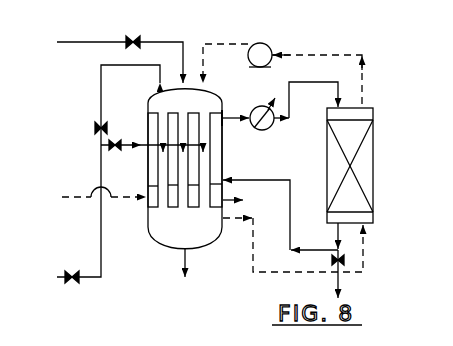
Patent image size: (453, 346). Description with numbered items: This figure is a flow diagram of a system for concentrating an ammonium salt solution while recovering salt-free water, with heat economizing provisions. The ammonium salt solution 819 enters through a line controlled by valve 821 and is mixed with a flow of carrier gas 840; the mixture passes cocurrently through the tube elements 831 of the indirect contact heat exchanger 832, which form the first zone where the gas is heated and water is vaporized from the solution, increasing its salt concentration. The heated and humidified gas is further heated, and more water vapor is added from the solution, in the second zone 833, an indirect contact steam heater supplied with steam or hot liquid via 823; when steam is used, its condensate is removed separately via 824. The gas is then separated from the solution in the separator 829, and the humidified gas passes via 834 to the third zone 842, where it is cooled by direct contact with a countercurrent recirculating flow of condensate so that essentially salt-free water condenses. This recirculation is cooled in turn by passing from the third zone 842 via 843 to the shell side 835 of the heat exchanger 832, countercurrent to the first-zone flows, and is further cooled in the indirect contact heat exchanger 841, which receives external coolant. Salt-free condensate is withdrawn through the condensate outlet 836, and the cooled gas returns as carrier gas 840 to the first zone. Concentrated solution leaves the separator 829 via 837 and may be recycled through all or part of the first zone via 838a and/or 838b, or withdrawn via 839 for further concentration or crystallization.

The ammonium salt solution 819 is at (106, 42).
The feed valve 821 is at (135, 38).
The heat exchange fluid supply 823 is at (88, 198).
The condensate removal line 824 is at (235, 198).
The separator 829 is at (190, 238).
The tube elements 831 is at (167, 177).
The indirect contact heat exchanger 832 is at (222, 147).
The second zone 833 is at (150, 200).
The gas flow line 834 is at (262, 272).
The shell side 835 is at (217, 171).
The condensate outlet 836 is at (339, 285).
The concentrated solution withdrawal line 837 is at (140, 277).
The recycle line 838a is at (101, 99).
The recycle line 838b is at (118, 148).
The withdrawal line 839 is at (82, 277).
The carrier gas 840 is at (222, 44).
The indirect contact heat exchanger 841 is at (265, 128).
The third zone 842 is at (374, 135).
The condensate recirculation line 843 is at (275, 180).